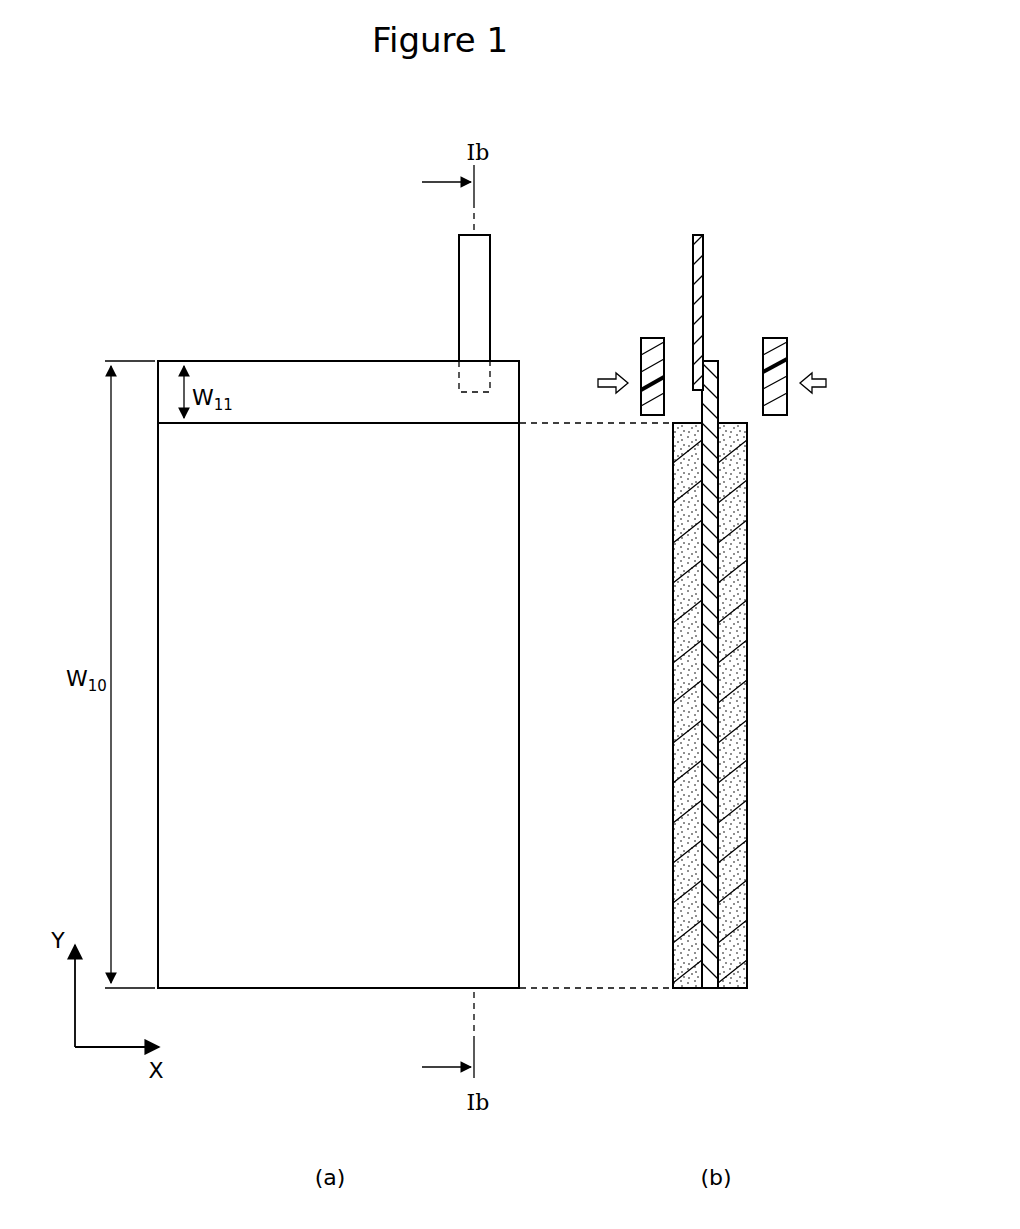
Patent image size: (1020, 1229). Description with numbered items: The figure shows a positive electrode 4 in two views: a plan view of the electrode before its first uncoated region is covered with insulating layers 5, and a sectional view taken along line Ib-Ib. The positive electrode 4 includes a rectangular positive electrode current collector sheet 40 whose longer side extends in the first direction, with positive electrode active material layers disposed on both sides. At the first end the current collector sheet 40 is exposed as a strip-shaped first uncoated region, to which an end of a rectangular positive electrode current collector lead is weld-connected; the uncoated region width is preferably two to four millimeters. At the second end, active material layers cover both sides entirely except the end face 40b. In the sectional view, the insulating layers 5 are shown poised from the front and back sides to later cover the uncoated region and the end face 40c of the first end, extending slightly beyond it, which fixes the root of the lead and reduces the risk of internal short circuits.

The positive electrode 4 is at (204, 236).
The positive electrode current collector sheet 40 is at (708, 738).
The end face of the second end 40b is at (708, 993).
The end face of the first end 40c is at (712, 354).
The insulating layers 5 is at (650, 356).